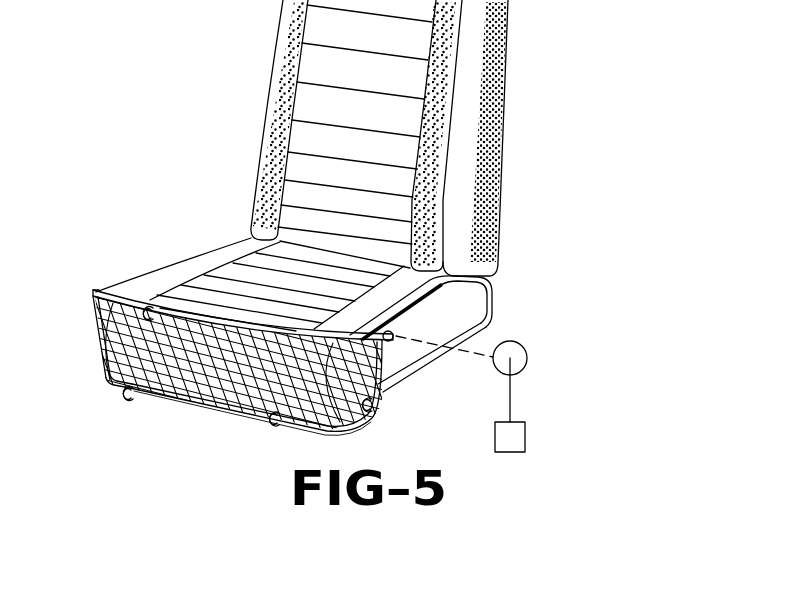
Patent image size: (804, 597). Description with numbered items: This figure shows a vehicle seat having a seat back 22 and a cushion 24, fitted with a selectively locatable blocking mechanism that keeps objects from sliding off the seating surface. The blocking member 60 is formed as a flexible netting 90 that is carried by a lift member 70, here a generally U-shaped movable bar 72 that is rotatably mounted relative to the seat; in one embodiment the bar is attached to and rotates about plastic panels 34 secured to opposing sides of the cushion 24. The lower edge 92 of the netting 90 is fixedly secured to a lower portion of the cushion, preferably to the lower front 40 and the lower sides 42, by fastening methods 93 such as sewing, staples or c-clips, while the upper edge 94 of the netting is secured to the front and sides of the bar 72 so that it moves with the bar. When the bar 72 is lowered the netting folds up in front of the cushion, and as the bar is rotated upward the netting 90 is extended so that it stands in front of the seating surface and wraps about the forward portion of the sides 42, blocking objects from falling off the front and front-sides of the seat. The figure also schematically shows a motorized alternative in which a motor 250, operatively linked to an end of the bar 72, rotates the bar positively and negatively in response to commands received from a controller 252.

The seat back 22 is at (325, 66).
The cushion 24 is at (337, 271).
The plastic panels 34 is at (466, 298).
The lower sides 42 is at (182, 263).
The lift member 70 is at (234, 348).
The movable bar 72 is at (134, 288).
The upper edge 94 is at (93, 298).
The flexible netting 90 is at (107, 380).
The lower front 40 is at (167, 393).
The blocking member 60 is at (215, 398).
The lower edge 92 is at (245, 410).
The fastening methods 93 is at (123, 398).
The motor 250 is at (522, 345).
The controller 252 is at (526, 430).